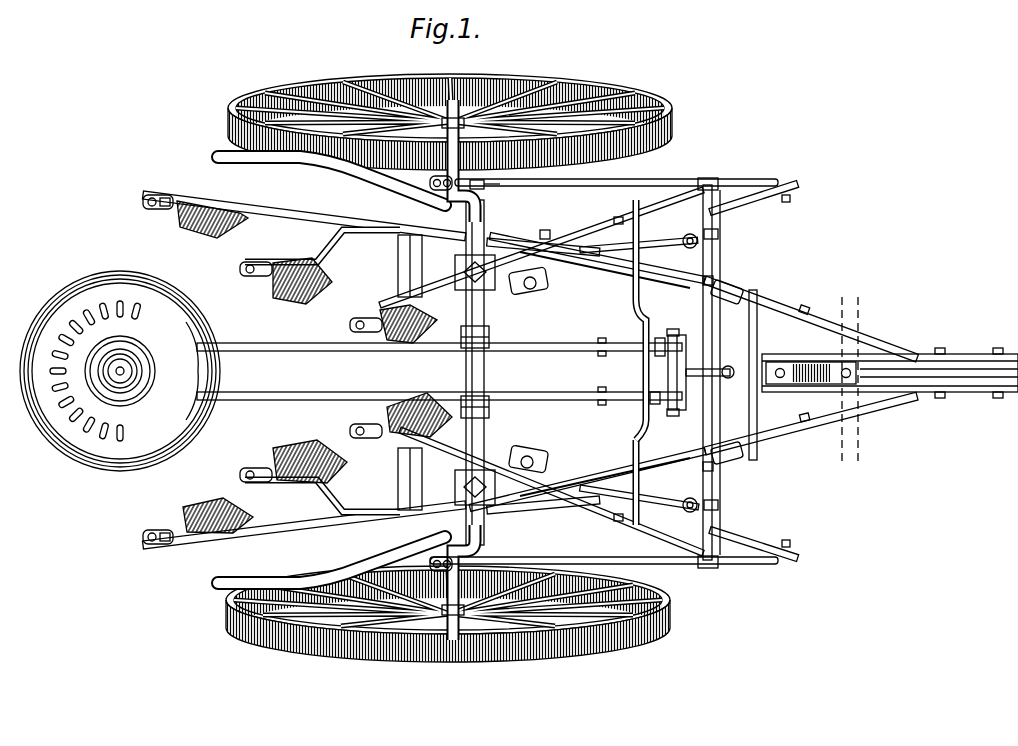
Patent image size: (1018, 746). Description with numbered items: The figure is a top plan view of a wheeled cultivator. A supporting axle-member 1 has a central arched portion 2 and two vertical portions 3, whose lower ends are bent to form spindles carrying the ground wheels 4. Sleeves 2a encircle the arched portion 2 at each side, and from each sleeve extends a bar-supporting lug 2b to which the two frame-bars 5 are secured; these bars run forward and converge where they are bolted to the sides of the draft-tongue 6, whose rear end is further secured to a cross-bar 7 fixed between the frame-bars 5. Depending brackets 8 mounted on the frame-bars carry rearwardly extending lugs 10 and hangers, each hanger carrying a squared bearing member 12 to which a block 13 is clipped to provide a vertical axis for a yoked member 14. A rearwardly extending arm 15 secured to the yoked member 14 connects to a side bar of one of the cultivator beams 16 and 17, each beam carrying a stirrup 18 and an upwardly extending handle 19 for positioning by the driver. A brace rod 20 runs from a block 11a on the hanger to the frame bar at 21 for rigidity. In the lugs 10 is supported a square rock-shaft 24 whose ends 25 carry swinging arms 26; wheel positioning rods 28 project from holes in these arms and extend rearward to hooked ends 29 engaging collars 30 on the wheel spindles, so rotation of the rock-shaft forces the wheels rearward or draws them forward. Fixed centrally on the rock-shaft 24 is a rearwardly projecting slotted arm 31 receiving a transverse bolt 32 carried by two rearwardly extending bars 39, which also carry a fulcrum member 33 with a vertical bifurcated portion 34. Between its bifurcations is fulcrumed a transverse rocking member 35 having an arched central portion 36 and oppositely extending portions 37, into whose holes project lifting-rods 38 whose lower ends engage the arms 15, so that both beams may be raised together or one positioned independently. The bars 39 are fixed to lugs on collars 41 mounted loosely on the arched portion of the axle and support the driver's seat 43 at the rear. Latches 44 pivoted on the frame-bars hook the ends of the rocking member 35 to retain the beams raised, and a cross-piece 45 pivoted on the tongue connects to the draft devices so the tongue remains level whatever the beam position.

The supporting axle-member 1 is at (439, 360).
The central arched portion 2 is at (484, 315).
The sleeve 2a is at (455, 272).
The bar-supporting lug 2b is at (500, 250).
The vertical portion 3 is at (467, 200).
The ground wheel 4 is at (578, 90).
The frame-bar 5 is at (663, 275).
The draft-tongue 6 is at (958, 354).
The cross-bar 7 is at (758, 322).
The depending bracket 8 is at (742, 292).
The rearwardly extending lug 10 is at (716, 282).
The block 11a is at (706, 178).
The squared bearing member 12 is at (424, 391).
The block 13 is at (690, 250).
The yoked member 14 is at (676, 243).
The rearwardly extending arm 15 is at (555, 268).
The cultivator beam 16 is at (302, 530).
The cultivator beam 17 is at (297, 218).
The stirrup 18 is at (398, 270).
The handle 19 is at (288, 164).
The brace rod 20 is at (600, 226).
The brace rod attachment point 21 is at (545, 230).
The square rock-shaft 24 is at (713, 408).
The rock-shaft end 25 is at (720, 232).
The swinging arm 26 is at (760, 188).
The wheel positioning rod 28 is at (735, 178).
The hooked end 29 is at (491, 188).
The collar 30 is at (431, 373).
The rearwardly projecting arm 31 is at (700, 369).
The transverse bolt 32 is at (667, 326).
The fulcrum member 33 is at (672, 415).
The vertical bifurcated portion 34 is at (666, 380).
The transverse rocking member 35 is at (633, 320).
The arched central portion 36 is at (650, 400).
The oppositely extending portion 37 is at (640, 238).
The lifting-rod 38 is at (618, 369).
The rearwardly extending bar 39 is at (655, 350).
The collar 41 is at (490, 335).
The driver's seat 43 is at (120, 371).
The latch 44 is at (604, 268).
The cross-piece 45 is at (860, 326).